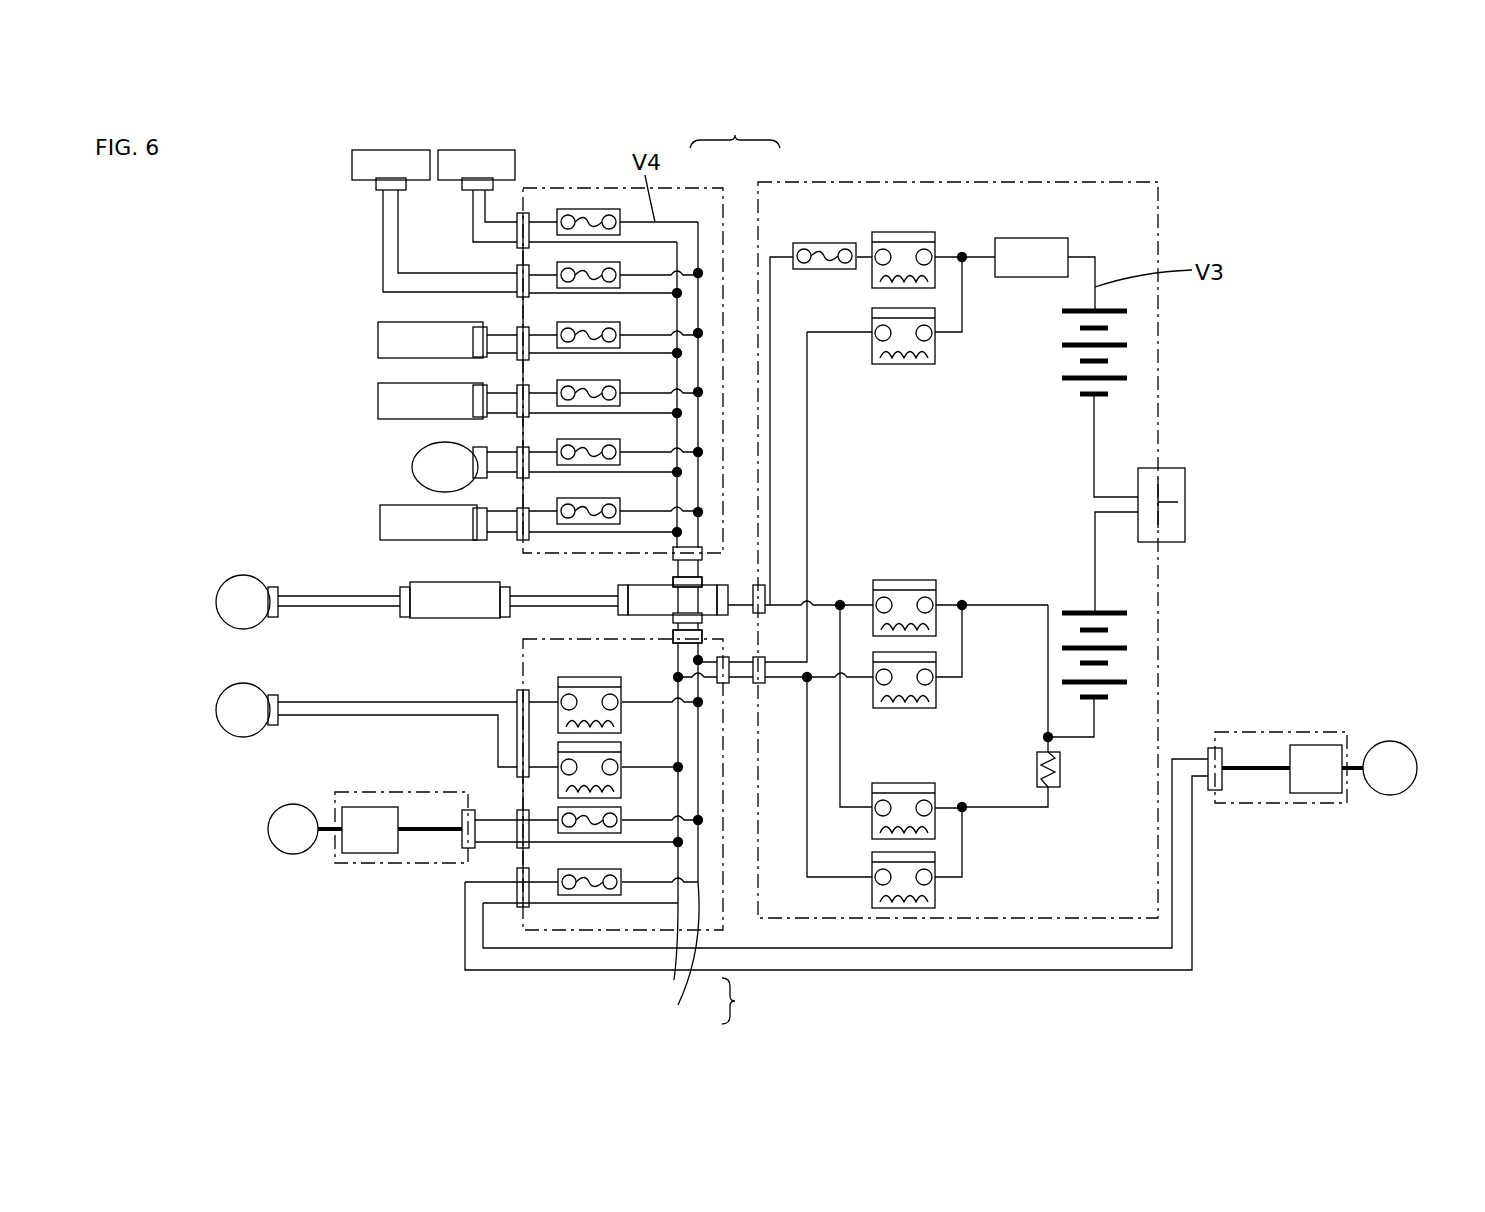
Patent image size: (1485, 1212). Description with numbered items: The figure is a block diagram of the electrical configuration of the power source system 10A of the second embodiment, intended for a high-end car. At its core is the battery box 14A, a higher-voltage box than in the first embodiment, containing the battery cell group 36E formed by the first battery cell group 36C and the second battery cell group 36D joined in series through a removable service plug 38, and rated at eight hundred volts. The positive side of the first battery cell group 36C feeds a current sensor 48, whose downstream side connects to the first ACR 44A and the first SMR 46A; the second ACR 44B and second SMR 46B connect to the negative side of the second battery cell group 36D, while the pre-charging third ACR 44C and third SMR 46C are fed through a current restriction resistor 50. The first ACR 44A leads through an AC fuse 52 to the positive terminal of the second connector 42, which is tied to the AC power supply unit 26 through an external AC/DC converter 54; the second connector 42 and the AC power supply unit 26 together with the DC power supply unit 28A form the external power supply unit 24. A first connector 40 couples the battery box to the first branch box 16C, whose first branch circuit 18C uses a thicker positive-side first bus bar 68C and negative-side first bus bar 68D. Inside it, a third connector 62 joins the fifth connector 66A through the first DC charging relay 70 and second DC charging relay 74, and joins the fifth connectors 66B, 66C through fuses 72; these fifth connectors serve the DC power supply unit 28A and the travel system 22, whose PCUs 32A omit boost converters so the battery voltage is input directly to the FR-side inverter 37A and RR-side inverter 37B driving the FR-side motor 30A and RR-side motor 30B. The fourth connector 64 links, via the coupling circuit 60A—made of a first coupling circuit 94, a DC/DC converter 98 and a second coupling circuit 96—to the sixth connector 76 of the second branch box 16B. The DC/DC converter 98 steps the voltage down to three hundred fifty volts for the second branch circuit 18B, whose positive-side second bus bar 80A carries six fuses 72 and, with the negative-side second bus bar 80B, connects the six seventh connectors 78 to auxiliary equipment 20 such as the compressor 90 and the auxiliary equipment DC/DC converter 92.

The power source system 10A is at (1264, 214).
The battery box 14A is at (1158, 345).
The second branch box 16B is at (598, 185).
The first branch box 16C is at (578, 932).
The second branch circuit 18B is at (745, 130).
The first branch circuit 18C is at (776, 1001).
The auxiliary equipment 20 is at (445, 152).
The travel system 22 is at (792, 806).
The power supply unit 24 is at (170, 603).
The AC power supply unit 26 is at (222, 595).
The DC power supply unit 28A is at (232, 698).
The FR-side motor 30A is at (268, 828).
The RR-side motor 30B is at (1405, 795).
The PCU 32A is at (847, 806).
The first battery cell group 36C is at (1150, 402).
The second battery cell group 36D is at (1147, 641).
The battery cell group 36E is at (1307, 446).
The FR-side inverter 37A is at (355, 807).
The RR-side inverter 37B is at (1320, 745).
The service plug 38 is at (1185, 512).
The first connector 40 is at (760, 685).
The second connector 42 is at (765, 588).
The first ACR 44A is at (903, 232).
The second ACR 44B is at (933, 583).
The third ACR 44C is at (930, 837).
The first SMR 46A is at (893, 365).
The second SMR 46B is at (893, 707).
The third SMR 46C is at (927, 908).
The current sensor 48 is at (1017, 238).
The current restriction resistor 50 is at (1060, 765).
The AC fuse 52 is at (833, 243).
The AC/DC converter 54 is at (415, 583).
The coupling circuit 60A is at (687, 610).
The third connector 62 is at (725, 685).
The fourth connector 64 is at (687, 647).
The fifth connector 66A is at (523, 692).
The fifth connector 66B is at (520, 848).
The fifth connector 66C is at (518, 908).
The positive-side first bus bar 68C is at (699, 822).
The negative-side first bus bar 68D is at (702, 834).
The first DC charging relay 70 is at (558, 715).
The fuse 72 is at (558, 328).
The second DC charging relay 74 is at (558, 745).
The sixth connector 76 is at (700, 550).
The seventh connector 78 is at (518, 334).
The positive-side second bus bar 80A is at (704, 218).
The negative-side second bus bar 80B is at (662, 240).
The compressor 90 is at (413, 466).
The auxiliary equipment DC/DC converter 92 is at (380, 522).
The first coupling circuit 94 is at (702, 637).
The second coupling circuit 96 is at (702, 583).
The DC/DC converter 98 is at (702, 595).